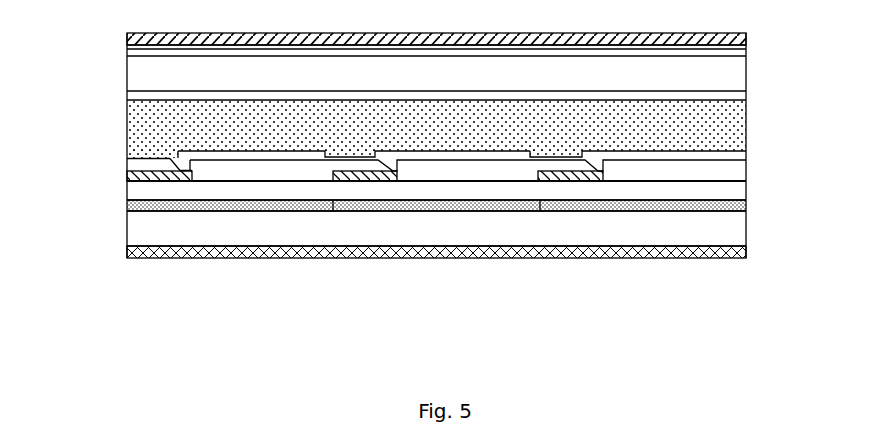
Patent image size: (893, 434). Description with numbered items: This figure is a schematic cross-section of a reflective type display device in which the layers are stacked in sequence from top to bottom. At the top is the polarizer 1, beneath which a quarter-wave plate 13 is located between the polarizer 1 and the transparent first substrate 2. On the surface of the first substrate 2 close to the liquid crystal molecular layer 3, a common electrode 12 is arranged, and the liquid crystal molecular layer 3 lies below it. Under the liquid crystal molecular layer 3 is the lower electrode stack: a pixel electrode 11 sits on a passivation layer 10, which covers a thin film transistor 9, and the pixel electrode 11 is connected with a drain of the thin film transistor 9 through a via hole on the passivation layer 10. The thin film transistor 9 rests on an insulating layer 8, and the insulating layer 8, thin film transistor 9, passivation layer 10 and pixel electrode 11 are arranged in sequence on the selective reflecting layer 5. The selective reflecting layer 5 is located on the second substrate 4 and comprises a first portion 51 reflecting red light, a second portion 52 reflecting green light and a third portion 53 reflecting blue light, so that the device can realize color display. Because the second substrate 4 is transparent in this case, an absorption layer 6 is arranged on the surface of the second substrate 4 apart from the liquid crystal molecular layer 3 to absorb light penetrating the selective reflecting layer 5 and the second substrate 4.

The polarizer 1 is at (712, 36).
The quarter-wave plate 13 is at (712, 49).
The first substrate 2 is at (712, 76).
The common electrode 12 is at (712, 97).
The liquid crystal molecular layer 3 is at (712, 132).
The pixel electrode 11 is at (170, 153).
The passivation layer 10 is at (711, 166).
The thin film transistor 9 is at (132, 176).
The insulating layer 8 is at (711, 193).
The selective reflecting layer 5 is at (436, 282).
The first portion 51 is at (305, 203).
The second portion 52 is at (445, 206).
The third portion 53 is at (633, 260).
The second substrate 4 is at (711, 227).
The absorption layer 6 is at (711, 250).